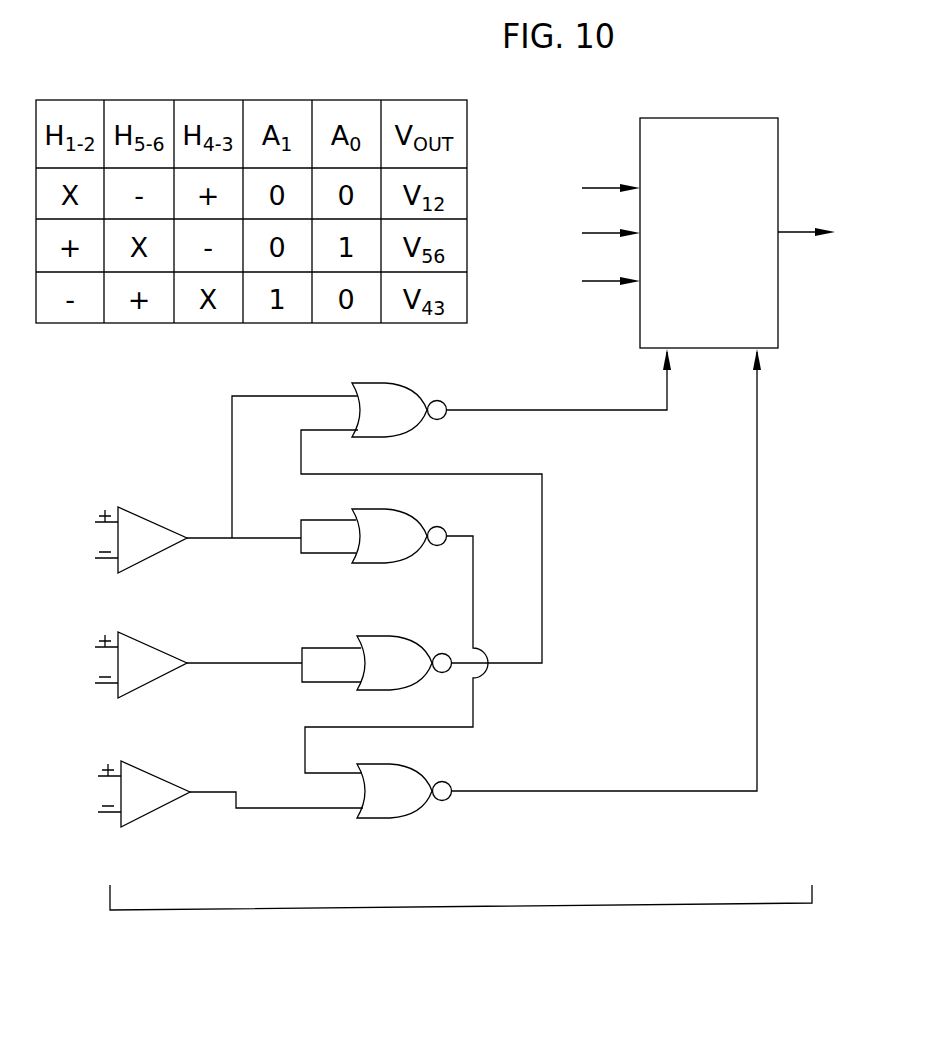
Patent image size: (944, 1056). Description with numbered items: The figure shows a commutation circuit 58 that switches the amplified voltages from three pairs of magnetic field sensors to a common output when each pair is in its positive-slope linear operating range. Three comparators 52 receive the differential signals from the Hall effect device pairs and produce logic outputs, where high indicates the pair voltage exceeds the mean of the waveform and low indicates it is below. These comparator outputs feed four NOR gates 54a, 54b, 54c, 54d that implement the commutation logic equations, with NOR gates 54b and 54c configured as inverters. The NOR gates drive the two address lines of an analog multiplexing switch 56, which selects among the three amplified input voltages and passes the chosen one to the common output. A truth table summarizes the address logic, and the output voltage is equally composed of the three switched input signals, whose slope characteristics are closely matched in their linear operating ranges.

The comparator 52 is at (143, 560).
The NOR gate 54a is at (451, 506).
The NOR gate 54b is at (394, 641).
The NOR gate 54c is at (377, 663).
The NOR gate 54d is at (475, 583).
The analog multiplexing switch 56 is at (683, 160).
The commutation circuit 58 is at (461, 918).